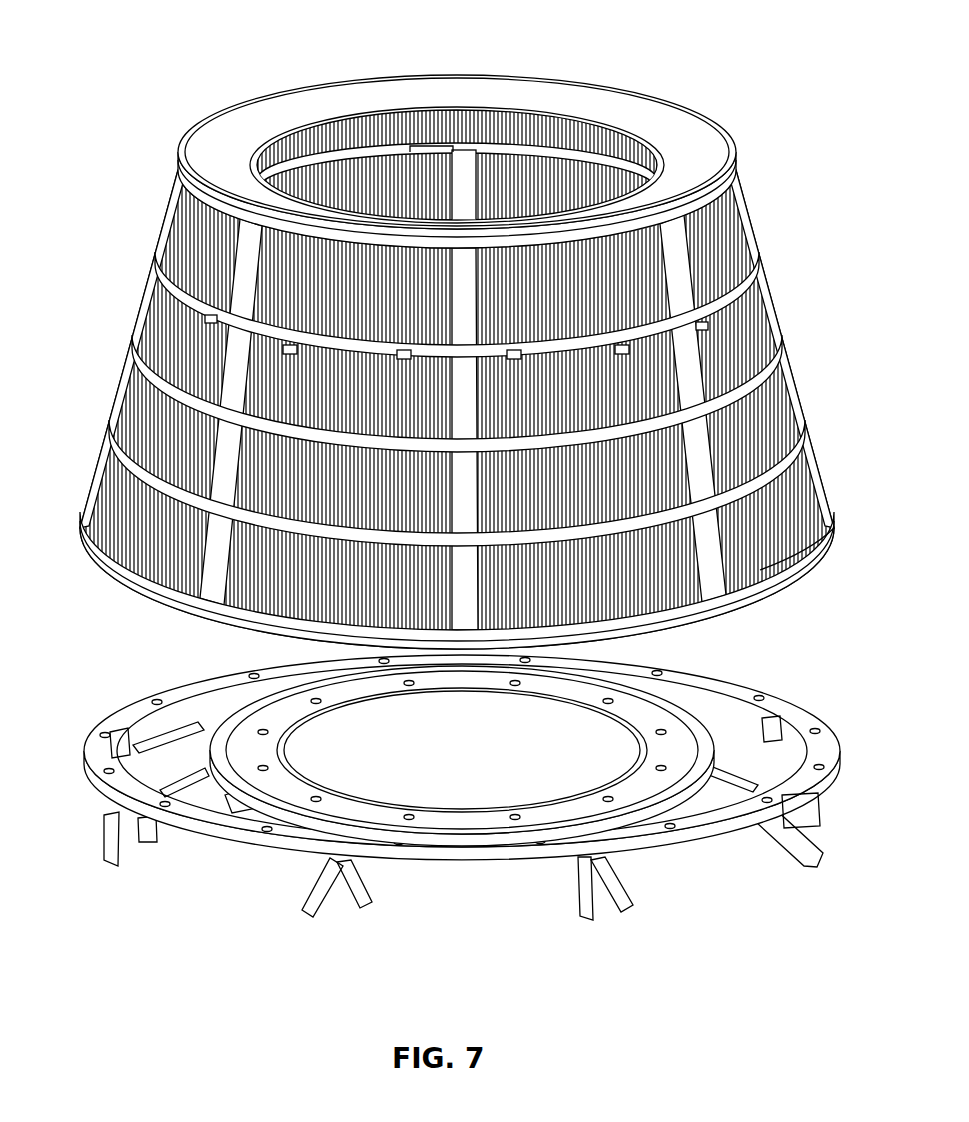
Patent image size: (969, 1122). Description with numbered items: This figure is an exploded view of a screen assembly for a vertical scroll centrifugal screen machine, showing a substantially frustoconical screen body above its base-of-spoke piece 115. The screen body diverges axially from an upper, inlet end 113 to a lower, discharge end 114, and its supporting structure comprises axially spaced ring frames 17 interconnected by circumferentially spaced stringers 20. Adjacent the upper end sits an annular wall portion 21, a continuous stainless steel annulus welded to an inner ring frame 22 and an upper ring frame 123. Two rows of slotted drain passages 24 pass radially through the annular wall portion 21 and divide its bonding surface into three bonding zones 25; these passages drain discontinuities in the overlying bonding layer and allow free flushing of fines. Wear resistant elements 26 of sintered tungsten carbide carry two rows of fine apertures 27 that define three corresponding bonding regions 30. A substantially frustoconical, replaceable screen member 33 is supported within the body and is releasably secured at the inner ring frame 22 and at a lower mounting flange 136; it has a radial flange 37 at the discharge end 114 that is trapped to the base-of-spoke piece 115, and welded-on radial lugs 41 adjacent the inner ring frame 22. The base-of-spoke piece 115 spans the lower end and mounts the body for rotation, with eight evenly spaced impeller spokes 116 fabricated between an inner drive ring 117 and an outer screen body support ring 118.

The ring frames 17 is at (137, 367).
The stringers 20 is at (773, 311).
The annular wall portion 21 is at (720, 231).
The inner ring frame 22 is at (750, 270).
The drain passages 24 is at (297, 262).
The bonding zones 25 is at (683, 263).
The wear resistant elements 26 is at (497, 135).
The apertures 27 is at (440, 146).
The bonding regions 30 is at (560, 150).
The replaceable screen member 33 is at (777, 414).
The radial flange 37 is at (818, 543).
The lugs 41 is at (212, 318).
The upper inlet end 113 is at (612, 137).
The lower discharge end 114 is at (462, 750).
The base-of-spoke piece 115 is at (693, 870).
The impeller spokes 116 is at (150, 846).
The inner drive ring 117 is at (587, 787).
The outer screen body support ring 118 is at (265, 840).
The upper ring frame 123 is at (730, 181).
The lower mounting flange 136 is at (152, 600).